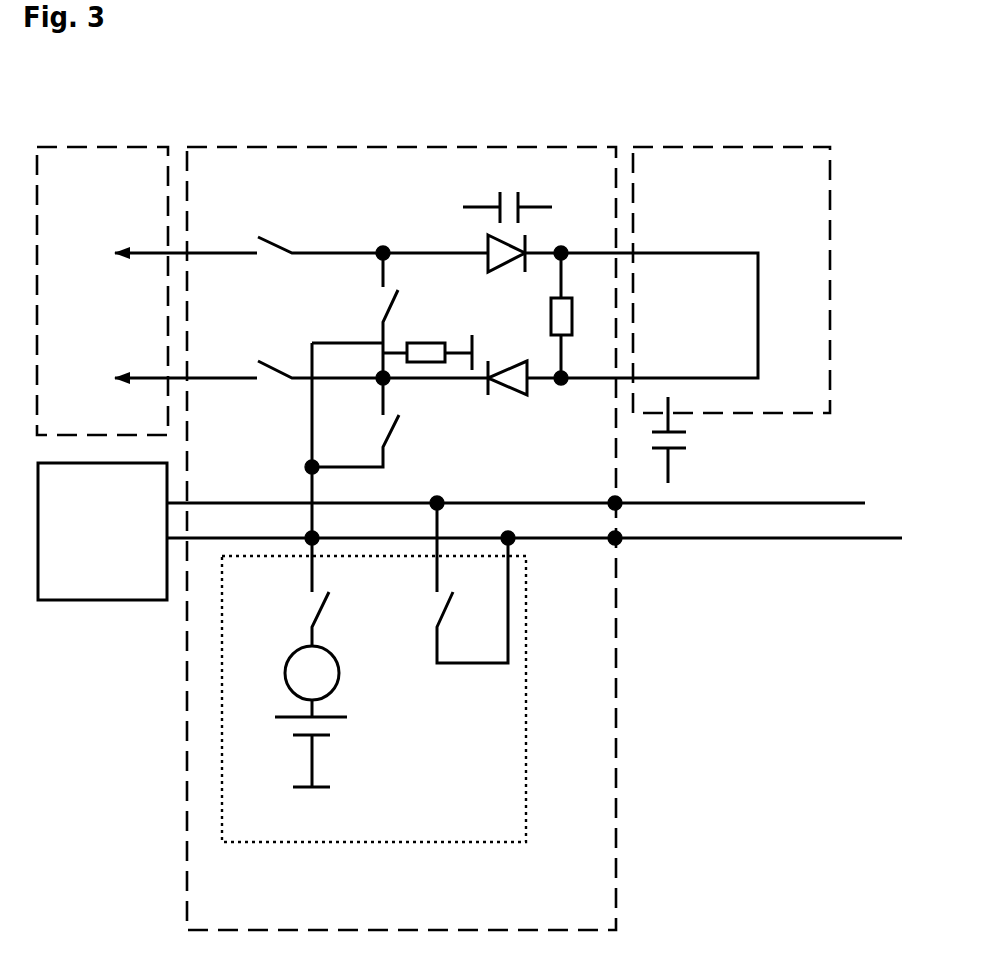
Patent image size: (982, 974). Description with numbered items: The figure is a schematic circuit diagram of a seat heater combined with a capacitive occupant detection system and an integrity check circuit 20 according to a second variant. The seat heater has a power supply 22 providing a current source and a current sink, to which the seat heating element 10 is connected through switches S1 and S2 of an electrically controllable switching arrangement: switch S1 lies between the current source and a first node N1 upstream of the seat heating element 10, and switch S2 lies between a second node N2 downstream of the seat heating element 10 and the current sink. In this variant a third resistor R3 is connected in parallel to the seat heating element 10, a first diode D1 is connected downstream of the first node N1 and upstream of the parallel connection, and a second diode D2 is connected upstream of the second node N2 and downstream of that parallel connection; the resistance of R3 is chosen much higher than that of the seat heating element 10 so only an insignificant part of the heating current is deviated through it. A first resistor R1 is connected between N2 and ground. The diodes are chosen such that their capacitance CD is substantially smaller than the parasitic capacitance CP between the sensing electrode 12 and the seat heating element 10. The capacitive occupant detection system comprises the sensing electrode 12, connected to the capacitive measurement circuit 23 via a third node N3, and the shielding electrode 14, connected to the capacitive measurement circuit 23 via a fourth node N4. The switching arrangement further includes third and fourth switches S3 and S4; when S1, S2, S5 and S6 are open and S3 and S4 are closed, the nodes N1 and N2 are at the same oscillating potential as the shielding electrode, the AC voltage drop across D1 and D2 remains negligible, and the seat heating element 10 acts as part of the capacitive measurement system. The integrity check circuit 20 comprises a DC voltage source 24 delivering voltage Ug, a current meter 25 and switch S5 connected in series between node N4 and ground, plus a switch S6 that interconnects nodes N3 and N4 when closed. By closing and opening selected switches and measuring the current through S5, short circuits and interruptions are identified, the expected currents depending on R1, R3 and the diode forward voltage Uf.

The seat heating element 10 is at (742, 147).
The sensing electrode 12 is at (736, 503).
The shielding electrode 14 is at (788, 539).
The integrity check circuit 20 is at (352, 843).
The power supply 22 is at (120, 147).
The capacitive measurement circuit 23 is at (92, 600).
The DC voltage source 24 is at (343, 733).
The current meter 25 is at (284, 664).
The first switch S1 is at (276, 234).
The second switch S2 is at (268, 358).
The third switch S3 is at (402, 309).
The fourth switch S4 is at (402, 433).
The fifth switch S5 is at (330, 620).
The sixth switch S6 is at (435, 610).
The first node N1 is at (380, 248).
The second node N2 is at (378, 383).
The third node N3 is at (441, 497).
The fourth node N4 is at (618, 541).
The first diode D1 is at (527, 240).
The second diode D2 is at (530, 390).
The first resistor R1 is at (443, 343).
The third resistor R3 is at (572, 325).
The diode capacitance CD is at (507, 191).
The parasitic capacitance CP is at (688, 440).
The forward voltage Uf is at (543, 408).